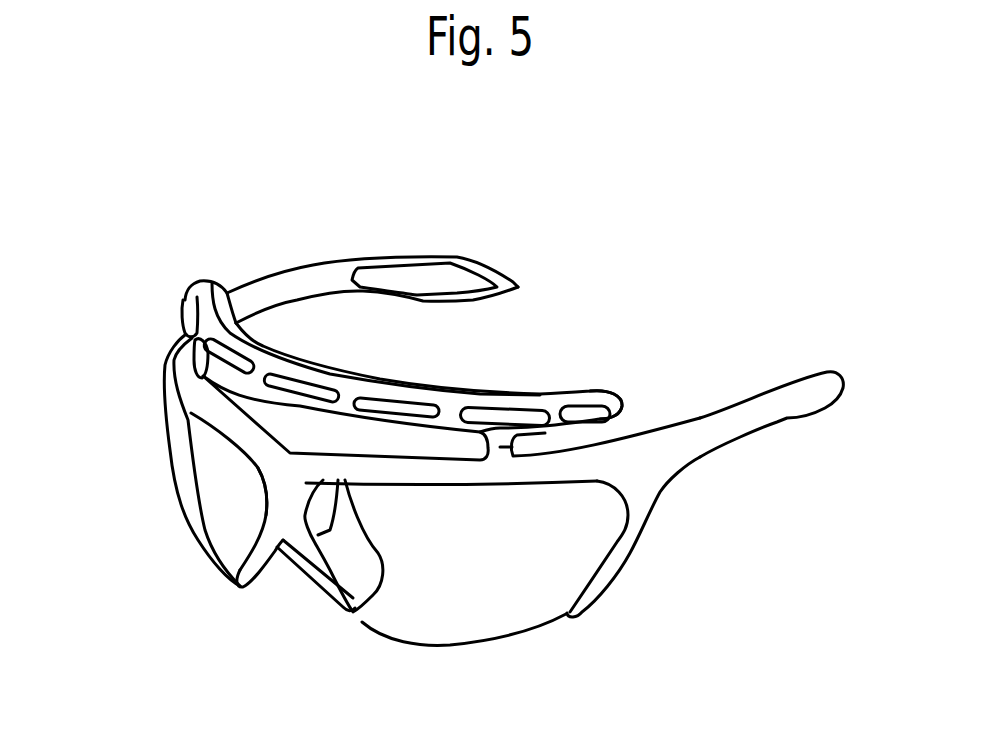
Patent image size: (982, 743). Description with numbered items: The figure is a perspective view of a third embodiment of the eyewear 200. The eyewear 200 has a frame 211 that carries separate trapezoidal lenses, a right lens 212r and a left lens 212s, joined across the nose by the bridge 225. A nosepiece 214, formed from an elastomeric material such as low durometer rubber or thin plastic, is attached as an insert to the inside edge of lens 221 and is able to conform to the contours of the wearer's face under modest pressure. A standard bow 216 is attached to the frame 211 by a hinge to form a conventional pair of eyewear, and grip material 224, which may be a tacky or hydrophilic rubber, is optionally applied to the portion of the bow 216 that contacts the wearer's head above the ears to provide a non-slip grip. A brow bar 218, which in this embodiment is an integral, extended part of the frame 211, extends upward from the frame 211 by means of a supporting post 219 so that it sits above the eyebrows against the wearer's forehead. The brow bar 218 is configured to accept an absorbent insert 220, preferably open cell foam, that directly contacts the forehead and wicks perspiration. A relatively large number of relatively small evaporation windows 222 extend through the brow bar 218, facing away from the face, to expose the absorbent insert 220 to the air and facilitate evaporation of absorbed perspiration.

The eyewear 200 is at (466, 473).
The frame 211 is at (637, 516).
The right lens 212r is at (210, 493).
The left lens 212s is at (540, 560).
The nosepiece 214 is at (277, 550).
The bow 216 is at (732, 428).
The brow bar 218 is at (622, 411).
The supporting post 219 is at (545, 434).
The absorbent insert 220 is at (488, 398).
The inside edge of lens 221 is at (343, 606).
The evaporation window 222 is at (320, 395).
The grip material 224 is at (436, 280).
The bridge 225 is at (290, 481).